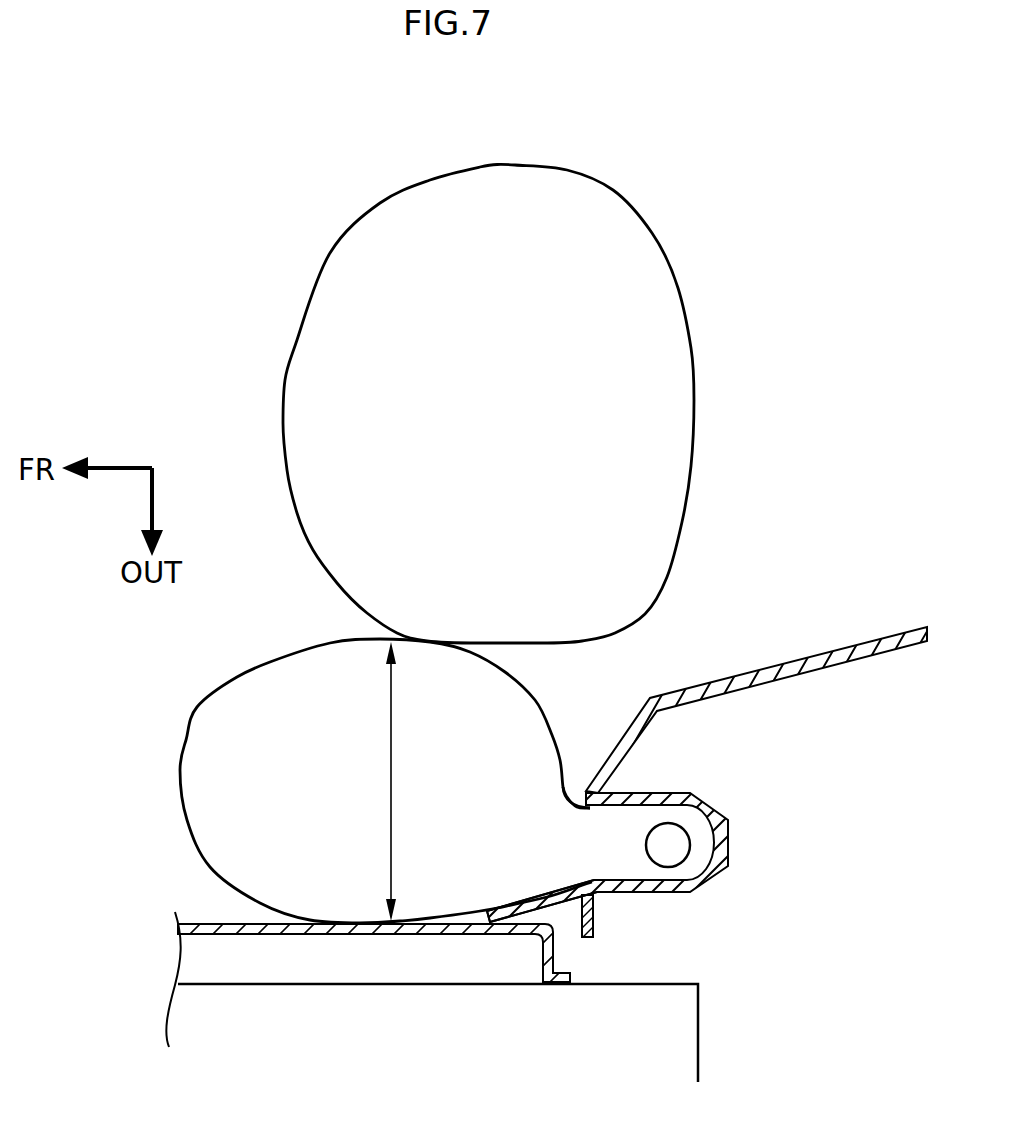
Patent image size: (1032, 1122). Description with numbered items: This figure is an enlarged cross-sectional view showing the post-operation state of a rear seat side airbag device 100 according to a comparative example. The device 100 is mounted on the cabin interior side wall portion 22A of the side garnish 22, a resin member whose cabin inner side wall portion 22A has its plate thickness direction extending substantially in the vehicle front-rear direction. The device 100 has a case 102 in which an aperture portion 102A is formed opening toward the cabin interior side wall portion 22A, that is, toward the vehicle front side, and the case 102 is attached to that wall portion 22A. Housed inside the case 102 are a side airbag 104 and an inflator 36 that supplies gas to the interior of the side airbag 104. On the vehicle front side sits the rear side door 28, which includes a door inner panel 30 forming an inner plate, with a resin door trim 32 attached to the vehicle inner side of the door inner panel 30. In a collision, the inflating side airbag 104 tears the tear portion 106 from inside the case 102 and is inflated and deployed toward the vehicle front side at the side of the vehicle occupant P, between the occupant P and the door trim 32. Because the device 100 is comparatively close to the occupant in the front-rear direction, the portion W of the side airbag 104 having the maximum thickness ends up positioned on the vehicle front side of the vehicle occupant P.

The vehicle occupant P is at (490, 193).
The portion of the side airbag having the maximum thickness W is at (394, 790).
The side garnish 22 is at (793, 658).
The cabin inner side wall portion 22A is at (577, 940).
The rear side door 28 is at (209, 910).
The door inner panel 30 is at (700, 1033).
The door trim 32 is at (263, 923).
The inflator 36 is at (682, 845).
The rear seat side airbag device 100 is at (584, 752).
The case 102 is at (702, 790).
The aperture portion 102A is at (605, 872).
The side airbag 104 is at (195, 706).
The tear portion 106 is at (588, 812).